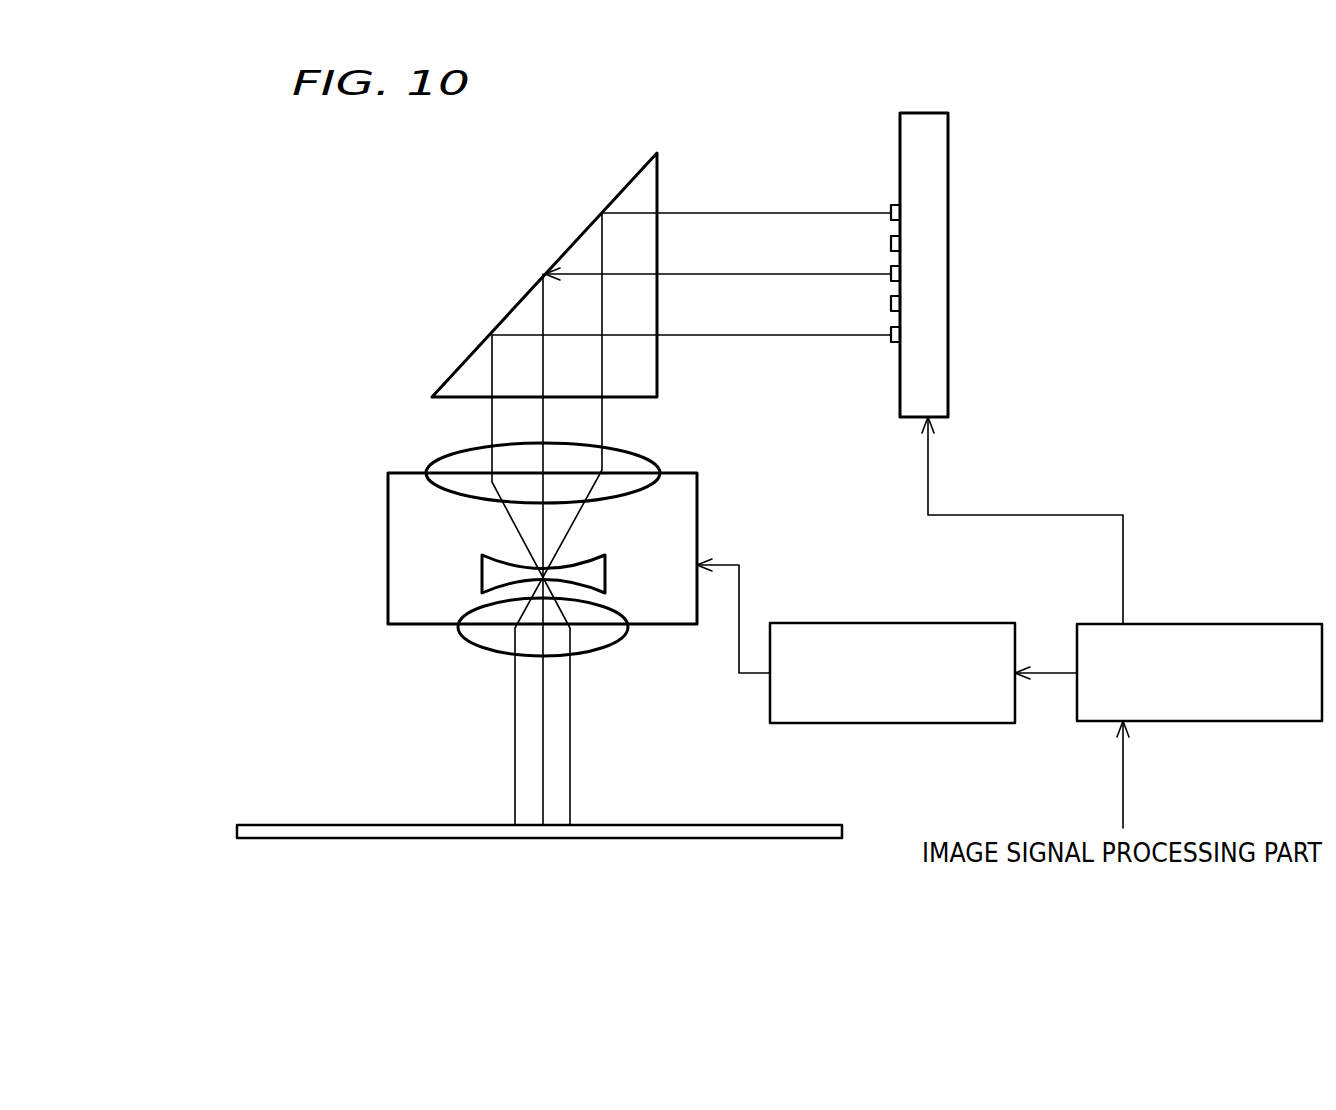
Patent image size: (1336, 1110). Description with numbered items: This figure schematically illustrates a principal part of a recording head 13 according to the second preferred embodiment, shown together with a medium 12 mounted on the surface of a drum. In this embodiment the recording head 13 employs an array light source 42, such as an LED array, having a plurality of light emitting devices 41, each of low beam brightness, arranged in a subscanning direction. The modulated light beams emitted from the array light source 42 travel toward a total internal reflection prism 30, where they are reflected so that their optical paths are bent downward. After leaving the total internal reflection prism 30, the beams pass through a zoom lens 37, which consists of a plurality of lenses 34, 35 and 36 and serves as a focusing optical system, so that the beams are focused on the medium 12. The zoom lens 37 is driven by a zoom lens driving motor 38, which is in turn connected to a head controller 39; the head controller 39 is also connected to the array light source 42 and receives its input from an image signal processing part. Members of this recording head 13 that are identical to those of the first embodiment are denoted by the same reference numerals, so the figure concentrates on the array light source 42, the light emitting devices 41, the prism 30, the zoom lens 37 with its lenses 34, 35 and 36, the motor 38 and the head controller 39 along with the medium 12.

The medium 12 is at (842, 831).
The recording head 13 is at (521, 213).
The total internal reflection prism 30 is at (647, 370).
The lens 34 is at (632, 465).
The lens 35 is at (593, 575).
The lens 36 is at (593, 637).
The zoom lens 37 is at (687, 523).
The zoom lens driving motor 38 is at (843, 723).
The head controller 39 is at (1213, 721).
The light emitting devices 41 is at (891, 205).
The array light source 42 is at (940, 335).